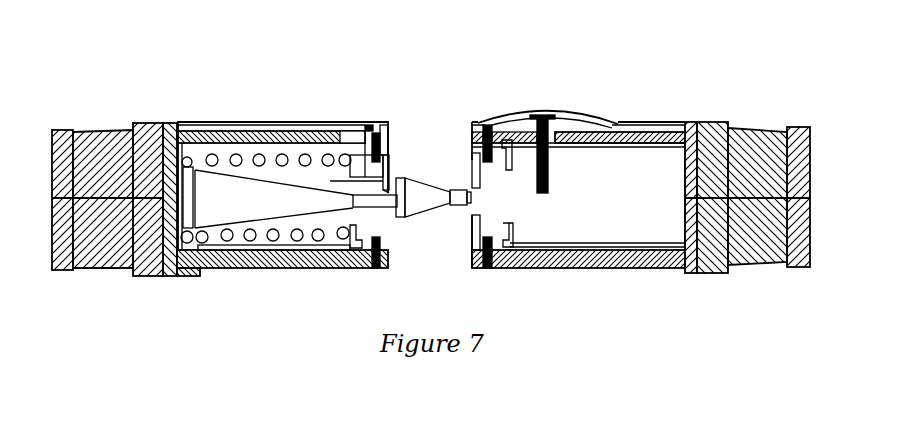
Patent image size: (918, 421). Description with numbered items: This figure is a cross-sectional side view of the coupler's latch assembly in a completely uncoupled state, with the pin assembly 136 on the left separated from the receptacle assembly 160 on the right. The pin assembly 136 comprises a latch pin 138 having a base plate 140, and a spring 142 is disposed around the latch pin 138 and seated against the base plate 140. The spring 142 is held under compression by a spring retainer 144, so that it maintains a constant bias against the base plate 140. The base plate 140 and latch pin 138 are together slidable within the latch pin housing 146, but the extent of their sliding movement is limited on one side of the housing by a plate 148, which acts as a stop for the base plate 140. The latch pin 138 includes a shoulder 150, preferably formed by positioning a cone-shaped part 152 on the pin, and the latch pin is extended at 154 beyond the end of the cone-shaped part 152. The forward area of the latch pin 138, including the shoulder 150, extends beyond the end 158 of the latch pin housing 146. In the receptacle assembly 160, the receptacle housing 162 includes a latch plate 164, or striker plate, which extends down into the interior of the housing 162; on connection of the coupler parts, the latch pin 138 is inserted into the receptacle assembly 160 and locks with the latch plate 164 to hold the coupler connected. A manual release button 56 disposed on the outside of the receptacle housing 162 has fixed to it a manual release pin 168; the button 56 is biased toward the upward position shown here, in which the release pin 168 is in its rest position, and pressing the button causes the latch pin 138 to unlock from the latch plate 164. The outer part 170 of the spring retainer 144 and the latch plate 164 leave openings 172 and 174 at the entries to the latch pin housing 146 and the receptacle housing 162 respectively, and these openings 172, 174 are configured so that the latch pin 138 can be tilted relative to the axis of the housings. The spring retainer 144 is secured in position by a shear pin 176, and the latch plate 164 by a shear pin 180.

The manual release button 56 is at (588, 120).
The pin assembly 136 is at (420, 152).
The latch pin 138 is at (387, 222).
The base plate 140 is at (170, 272).
The spring 142 is at (182, 150).
The spring retainer 144 is at (262, 158).
The latch pin housing 146 is at (228, 270).
The plate 148 is at (211, 270).
The shoulder 150 is at (398, 176).
The cone-shaped part 152 is at (424, 202).
The latch pin extension 154 is at (461, 205).
The end of latch pin housing 158 is at (394, 264).
The receptacle assembly 160 is at (567, 207).
The receptacle housing 162 is at (653, 268).
The latch plate 164 is at (503, 138).
The manual release pin 168 is at (618, 130).
The outer part of spring retainer 170 is at (380, 128).
The opening 172 is at (355, 214).
The opening 174 is at (505, 207).
The shear pin 176 is at (358, 145).
The shear pin 180 is at (486, 178).